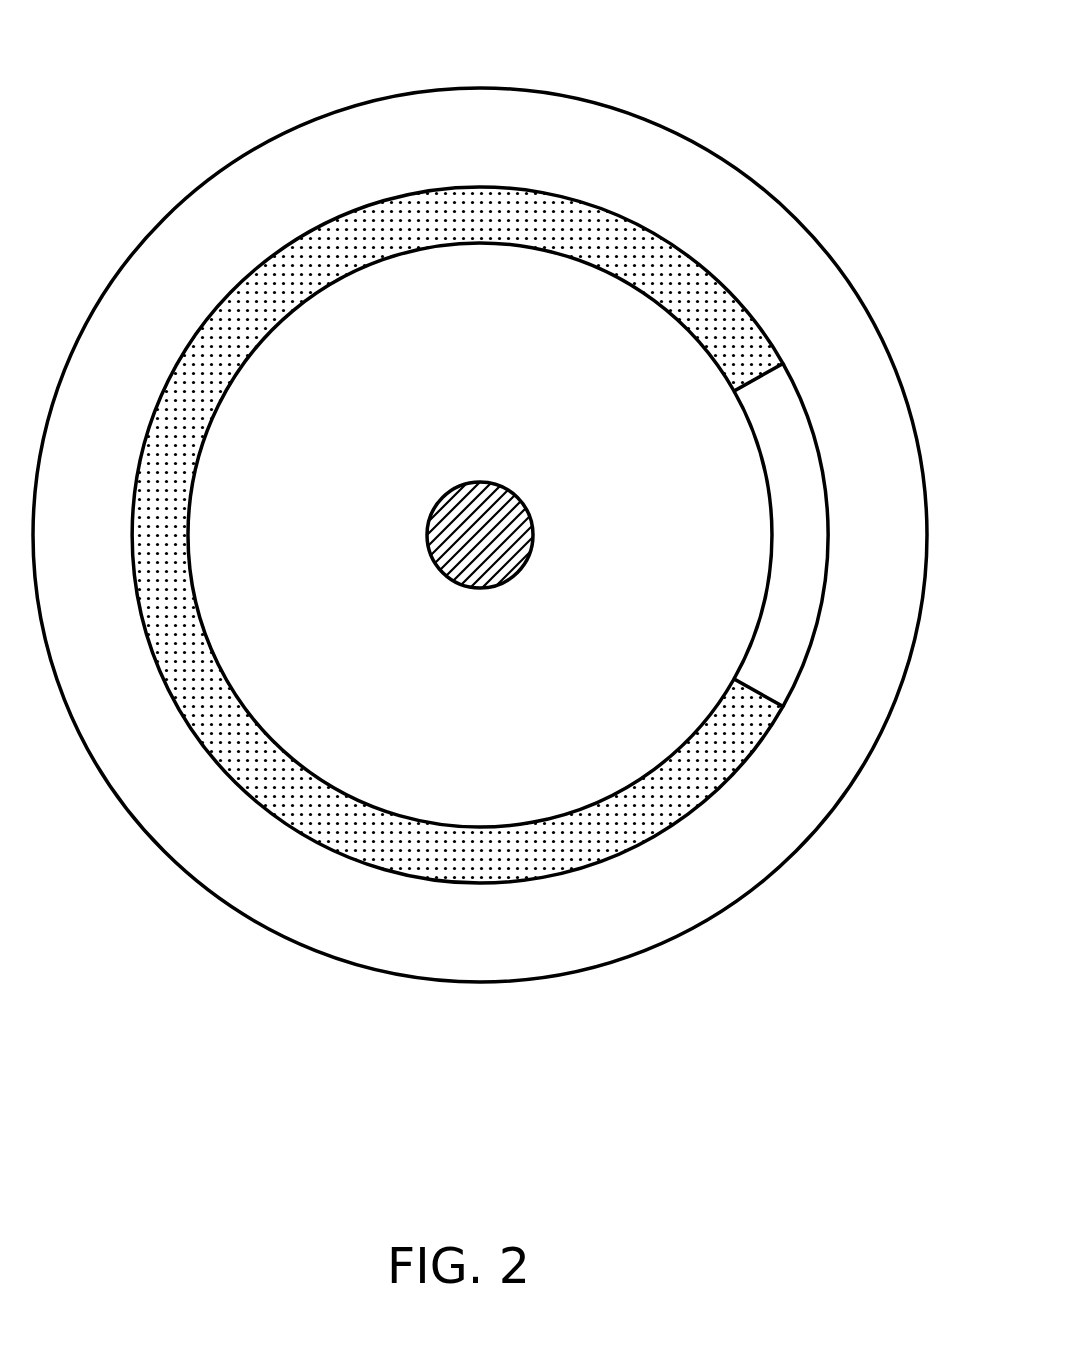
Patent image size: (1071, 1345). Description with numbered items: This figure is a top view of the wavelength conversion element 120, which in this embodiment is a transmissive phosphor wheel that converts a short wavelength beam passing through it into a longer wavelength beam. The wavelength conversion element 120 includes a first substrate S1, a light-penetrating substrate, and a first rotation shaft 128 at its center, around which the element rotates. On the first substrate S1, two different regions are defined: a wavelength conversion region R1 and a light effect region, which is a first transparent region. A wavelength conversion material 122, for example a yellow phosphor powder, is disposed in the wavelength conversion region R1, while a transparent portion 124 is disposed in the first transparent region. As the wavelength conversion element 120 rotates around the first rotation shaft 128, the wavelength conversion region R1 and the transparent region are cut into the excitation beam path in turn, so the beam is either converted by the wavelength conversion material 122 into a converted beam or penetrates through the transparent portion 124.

The wavelength conversion element 120 is at (487, 556).
The wavelength conversion material 122 is at (457, 551).
The transparent portion 124 is at (838, 531).
The first rotation shaft 128 is at (490, 550).
The first substrate S1 is at (147, 307).
The wavelength conversion region R1 is at (390, 875).